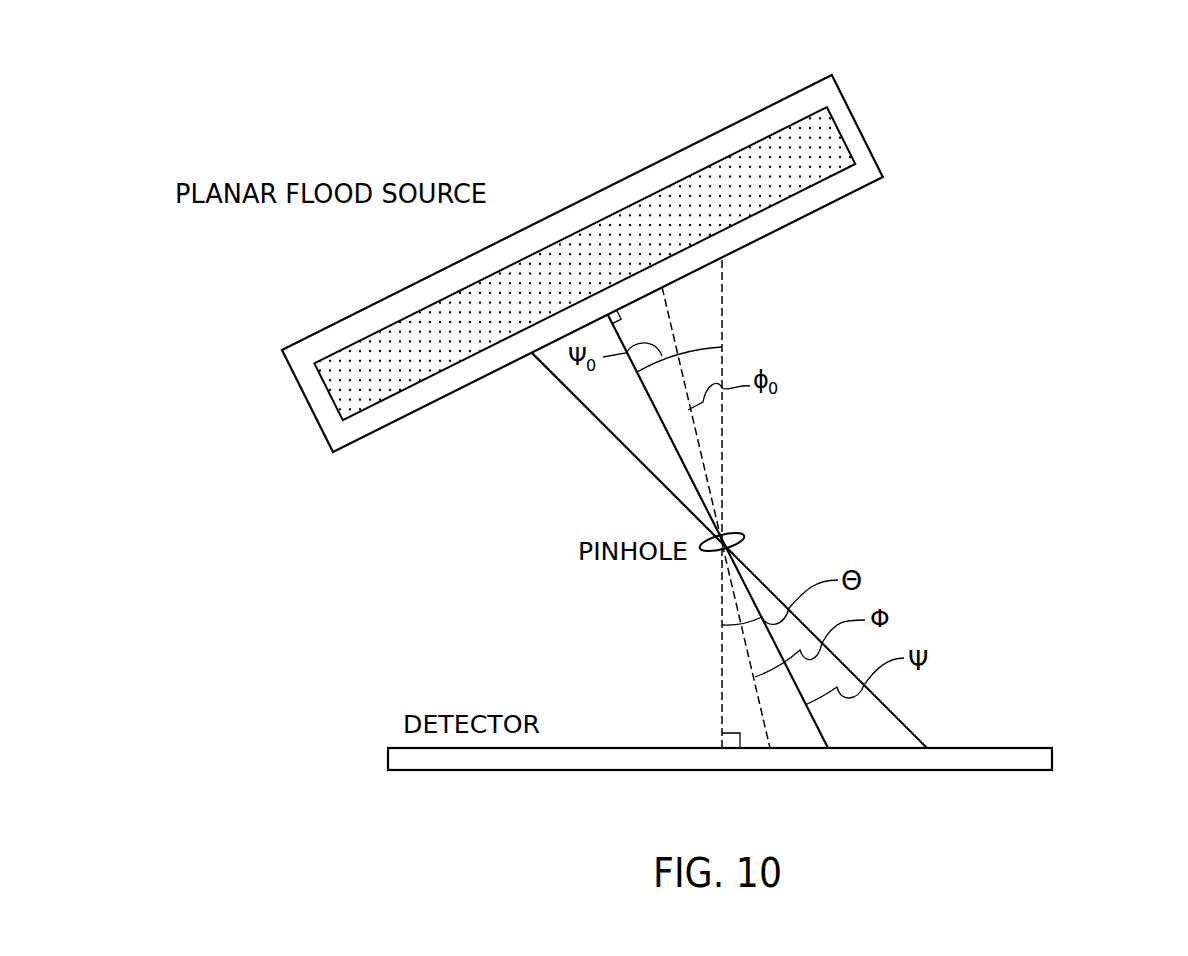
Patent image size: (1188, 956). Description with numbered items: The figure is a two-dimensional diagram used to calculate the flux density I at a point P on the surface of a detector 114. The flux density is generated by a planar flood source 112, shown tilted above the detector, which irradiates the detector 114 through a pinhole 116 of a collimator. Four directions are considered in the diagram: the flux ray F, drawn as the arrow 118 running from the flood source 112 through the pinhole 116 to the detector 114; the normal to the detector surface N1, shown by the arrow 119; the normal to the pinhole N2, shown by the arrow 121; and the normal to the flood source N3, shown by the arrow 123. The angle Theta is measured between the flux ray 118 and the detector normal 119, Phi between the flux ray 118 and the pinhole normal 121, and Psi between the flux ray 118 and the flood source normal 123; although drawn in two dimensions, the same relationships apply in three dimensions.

The planar flood source 112 is at (857, 123).
The detector 114 is at (1053, 760).
The pinhole 116 is at (746, 536).
The flux ray 118 is at (570, 390).
The normal to the detector surface 119 is at (723, 282).
The normal to the pinhole 121 is at (672, 322).
The normal to the flood source 123 is at (661, 419).